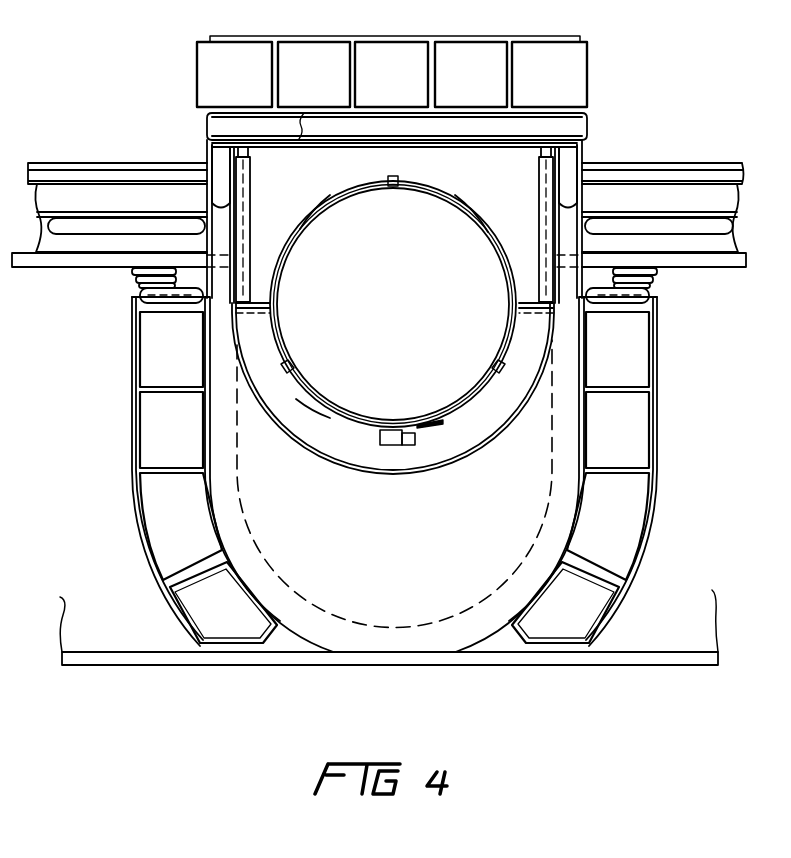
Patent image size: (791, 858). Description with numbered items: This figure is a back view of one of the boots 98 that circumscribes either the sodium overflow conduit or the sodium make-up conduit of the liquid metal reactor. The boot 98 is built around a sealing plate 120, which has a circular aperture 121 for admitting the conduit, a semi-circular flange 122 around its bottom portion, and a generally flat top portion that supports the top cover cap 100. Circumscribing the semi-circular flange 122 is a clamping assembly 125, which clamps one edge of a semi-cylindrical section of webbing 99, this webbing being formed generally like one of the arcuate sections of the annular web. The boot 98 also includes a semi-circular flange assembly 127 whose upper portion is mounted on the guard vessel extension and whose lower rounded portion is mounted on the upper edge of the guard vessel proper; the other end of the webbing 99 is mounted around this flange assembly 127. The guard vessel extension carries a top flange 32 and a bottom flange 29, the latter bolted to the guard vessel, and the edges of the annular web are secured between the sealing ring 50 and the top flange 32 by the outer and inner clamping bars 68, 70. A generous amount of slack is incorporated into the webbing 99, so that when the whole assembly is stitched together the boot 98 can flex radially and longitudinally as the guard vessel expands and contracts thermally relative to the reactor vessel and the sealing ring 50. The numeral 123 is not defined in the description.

The sealing ring 50 is at (241, 46).
The boot 98 is at (186, 128).
The top cover cap 100 is at (566, 130).
The inner clamping bar 70 is at (109, 163).
The top flange 32 is at (45, 262).
The outer clamping bar 68 is at (107, 228).
The sealing plate 120 is at (303, 195).
The circular aperture 121 is at (300, 229).
The semi-circular flange 122 is at (296, 399).
The ring segment 123 is at (488, 232).
The clamping assembly 125 is at (393, 430).
The semi-circular flange assembly 127 is at (145, 425).
The semi-cylindrical section of webbing 99 is at (291, 589).
The bottom flange 29 is at (232, 661).